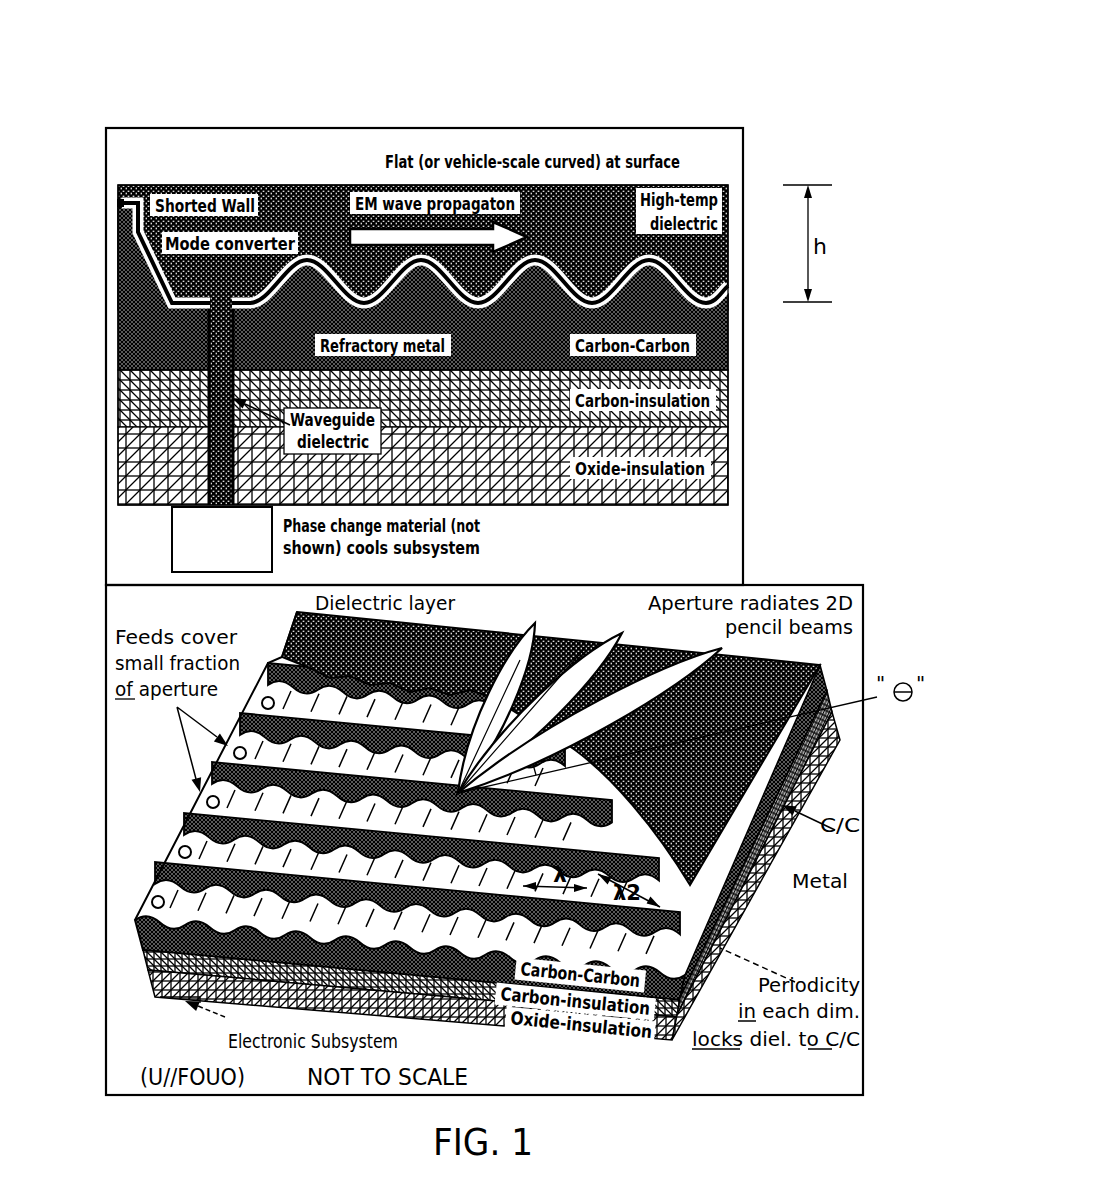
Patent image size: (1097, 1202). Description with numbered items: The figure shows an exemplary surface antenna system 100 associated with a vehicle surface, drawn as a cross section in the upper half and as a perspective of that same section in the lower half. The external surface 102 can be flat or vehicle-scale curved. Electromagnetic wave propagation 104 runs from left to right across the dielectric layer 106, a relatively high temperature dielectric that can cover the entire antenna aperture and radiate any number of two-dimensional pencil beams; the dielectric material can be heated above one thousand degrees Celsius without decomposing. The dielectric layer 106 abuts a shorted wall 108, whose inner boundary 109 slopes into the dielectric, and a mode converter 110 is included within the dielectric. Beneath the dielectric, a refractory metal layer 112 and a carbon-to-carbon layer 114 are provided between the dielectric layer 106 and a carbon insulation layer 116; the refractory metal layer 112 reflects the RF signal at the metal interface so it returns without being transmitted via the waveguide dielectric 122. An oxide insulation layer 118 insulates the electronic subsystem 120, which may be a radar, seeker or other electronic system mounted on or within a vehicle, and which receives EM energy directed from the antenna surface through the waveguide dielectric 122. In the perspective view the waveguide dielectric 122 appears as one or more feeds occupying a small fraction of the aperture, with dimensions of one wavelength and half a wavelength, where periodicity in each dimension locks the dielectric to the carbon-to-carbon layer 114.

The antenna system 100 is at (733, 66).
The external surface 102 is at (588, 128).
The electromagnetic wave propagation 104 is at (347, 197).
The dielectric layer 106 is at (728, 200).
The shorted wall 108 is at (118, 203).
The mode converter wall 109 is at (118, 207).
The mode converter 110 is at (160, 283).
The refractory metal layer 112 is at (728, 288).
The carbon-to-carbon (C/C) layer 114 is at (728, 352).
The carbon insulation layer 116 is at (728, 399).
The oxide insulation layer 118 is at (728, 468).
The electronic subsystem 120 is at (172, 540).
The waveguide dielectric 122 is at (205, 373).